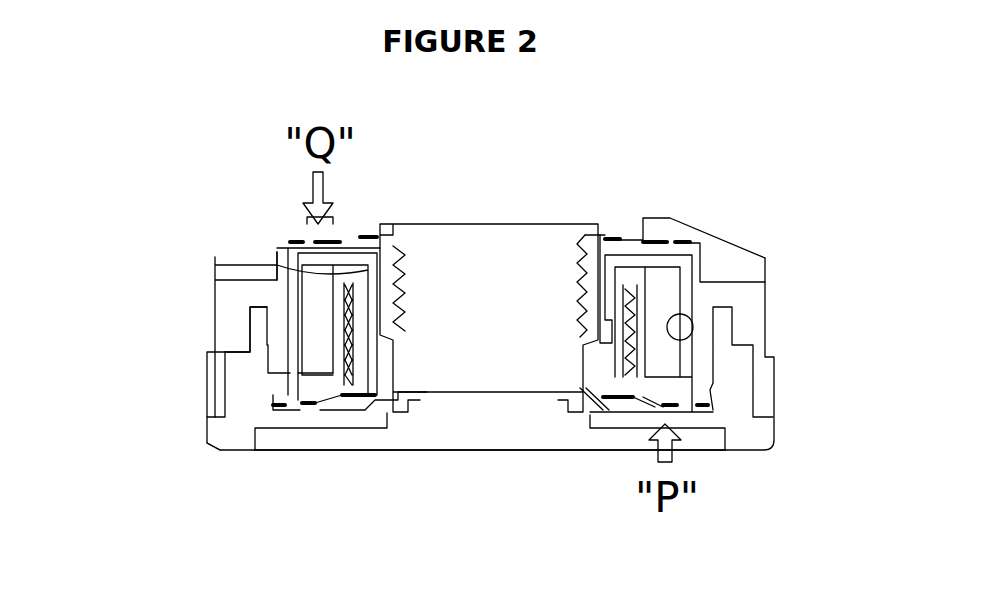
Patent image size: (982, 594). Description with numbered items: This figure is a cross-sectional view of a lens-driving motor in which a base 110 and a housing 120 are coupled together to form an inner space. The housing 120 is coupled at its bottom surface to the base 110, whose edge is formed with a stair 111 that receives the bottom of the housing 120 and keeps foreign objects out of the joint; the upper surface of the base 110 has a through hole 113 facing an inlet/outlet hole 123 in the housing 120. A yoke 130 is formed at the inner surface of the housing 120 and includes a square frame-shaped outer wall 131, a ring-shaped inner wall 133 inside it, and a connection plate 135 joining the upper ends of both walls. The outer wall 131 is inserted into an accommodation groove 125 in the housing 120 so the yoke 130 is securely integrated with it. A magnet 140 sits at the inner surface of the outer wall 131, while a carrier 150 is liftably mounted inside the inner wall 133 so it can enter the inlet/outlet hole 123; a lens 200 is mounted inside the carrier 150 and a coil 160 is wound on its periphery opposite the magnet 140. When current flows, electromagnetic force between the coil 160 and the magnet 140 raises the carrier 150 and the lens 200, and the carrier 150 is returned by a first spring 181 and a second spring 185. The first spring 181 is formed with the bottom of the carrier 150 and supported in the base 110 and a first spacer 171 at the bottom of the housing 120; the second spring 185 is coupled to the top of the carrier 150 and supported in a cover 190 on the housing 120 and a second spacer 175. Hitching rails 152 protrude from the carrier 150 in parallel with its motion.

The base 110 is at (768, 432).
The stair 111 is at (223, 417).
The through hole 113 is at (504, 442).
The housing 120 is at (757, 303).
The inlet/outlet hole 123 is at (625, 238).
The accommodation groove 125 is at (700, 308).
The yoke 130 is at (132, 330).
The outer wall 131 is at (300, 332).
The inner wall 133 is at (297, 217).
The connection plate 135 is at (288, 248).
The magnet 140 is at (300, 365).
The carrier 150 is at (404, 264).
The hitching rails 152 is at (378, 325).
The coil 160 is at (365, 358).
The first spacer 171 is at (297, 410).
The second spacer 175 is at (668, 240).
The first spring 181 is at (345, 395).
The second spring 185 is at (610, 236).
The cover 190 is at (740, 258).
The lens 200 is at (518, 365).